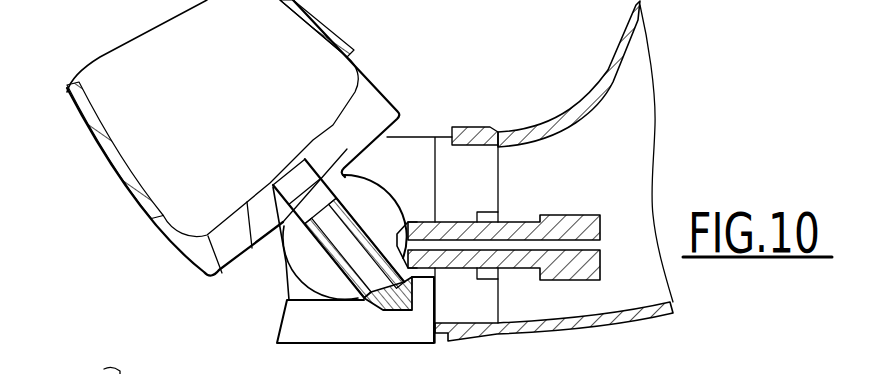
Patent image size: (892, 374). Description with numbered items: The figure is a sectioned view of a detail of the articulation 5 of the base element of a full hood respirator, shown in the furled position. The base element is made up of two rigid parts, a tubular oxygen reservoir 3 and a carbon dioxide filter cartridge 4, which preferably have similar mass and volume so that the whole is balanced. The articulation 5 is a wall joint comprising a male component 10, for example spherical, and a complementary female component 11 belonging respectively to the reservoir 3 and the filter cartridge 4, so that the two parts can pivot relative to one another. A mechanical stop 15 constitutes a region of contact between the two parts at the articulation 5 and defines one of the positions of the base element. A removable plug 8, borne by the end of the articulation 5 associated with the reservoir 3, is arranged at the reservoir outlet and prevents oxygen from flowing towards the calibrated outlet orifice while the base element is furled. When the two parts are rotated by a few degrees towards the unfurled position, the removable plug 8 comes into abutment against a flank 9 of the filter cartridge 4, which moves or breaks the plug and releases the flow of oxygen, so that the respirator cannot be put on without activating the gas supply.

The tubular oxygen reservoir 3 is at (126, 164).
The carbon dioxide filter cartridge 4 is at (587, 102).
The articulation 5 is at (280, 282).
The removable plug 8 is at (413, 270).
The flank 9 is at (411, 275).
The male component 10 is at (363, 197).
The female component 11 is at (404, 195).
The mechanical stop 15 is at (276, 326).